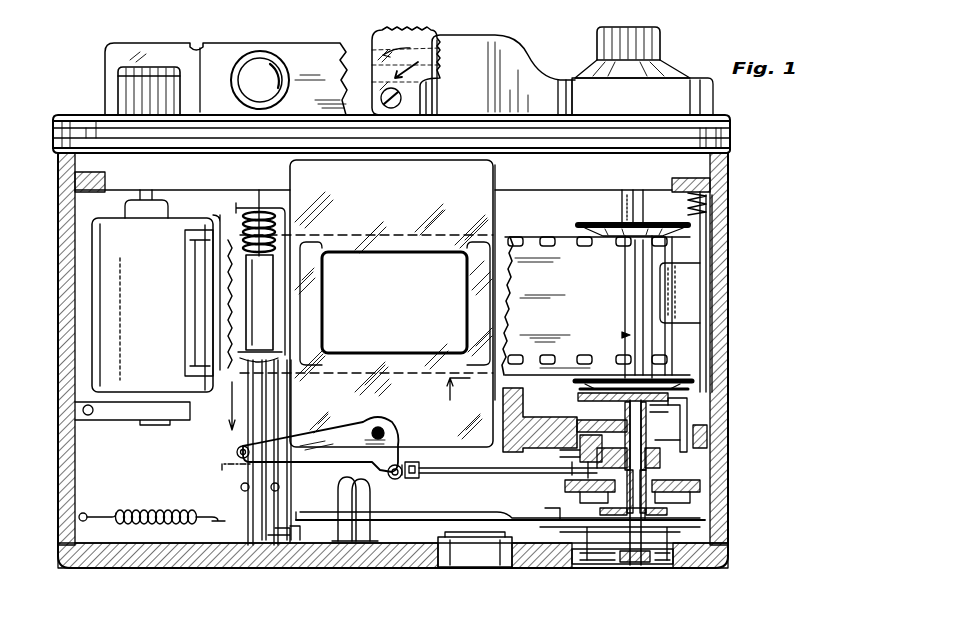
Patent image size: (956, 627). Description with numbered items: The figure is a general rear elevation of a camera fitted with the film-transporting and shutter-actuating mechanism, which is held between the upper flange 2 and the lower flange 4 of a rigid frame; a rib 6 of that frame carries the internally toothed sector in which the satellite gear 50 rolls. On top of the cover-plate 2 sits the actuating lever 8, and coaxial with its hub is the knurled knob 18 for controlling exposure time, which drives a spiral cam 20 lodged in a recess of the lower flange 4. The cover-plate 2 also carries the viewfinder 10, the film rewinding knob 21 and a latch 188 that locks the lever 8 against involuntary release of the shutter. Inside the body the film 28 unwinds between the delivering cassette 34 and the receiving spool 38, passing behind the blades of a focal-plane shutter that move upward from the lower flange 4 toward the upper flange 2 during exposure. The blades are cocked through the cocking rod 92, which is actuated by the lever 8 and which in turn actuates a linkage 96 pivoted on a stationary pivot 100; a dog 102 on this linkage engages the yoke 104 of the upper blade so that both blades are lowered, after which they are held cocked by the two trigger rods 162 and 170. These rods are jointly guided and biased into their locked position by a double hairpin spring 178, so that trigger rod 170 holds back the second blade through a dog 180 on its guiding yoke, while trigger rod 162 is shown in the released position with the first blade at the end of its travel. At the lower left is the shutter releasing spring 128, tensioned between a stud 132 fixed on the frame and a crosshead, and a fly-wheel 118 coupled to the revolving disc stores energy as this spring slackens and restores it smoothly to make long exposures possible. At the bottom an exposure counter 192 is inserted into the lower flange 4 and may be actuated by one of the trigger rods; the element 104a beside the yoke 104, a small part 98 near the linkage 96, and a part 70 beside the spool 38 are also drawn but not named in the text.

The upper flange 2 is at (560, 190).
The lower flange 4 is at (545, 562).
The rib 6 is at (543, 420).
The actuating lever 8 is at (487, 44).
The viewfinder 10 is at (264, 72).
The knurled knob 18 is at (662, 40).
The spiral cam 20 is at (600, 566).
The film rewinding knob 21 is at (120, 81).
The film 28 is at (526, 246).
The delivering cassette 34 is at (172, 230).
The receiving spool 38 is at (600, 224).
The satellite gear 50 is at (588, 440).
The spool latch 70 is at (676, 296).
The cocking rod 92 is at (450, 475).
The linkage 96 is at (333, 450).
The lever end bracket 98 is at (416, 468).
The stationary pivot 100 is at (383, 428).
The dog 102 is at (237, 452).
The yoke 104 is at (233, 372).
The plunger lower end 104a is at (238, 477).
The fly-wheel 118 is at (566, 493).
The shutter releasing spring 128 is at (152, 507).
The stud 132 is at (96, 507).
The trigger rod 162 is at (392, 480).
The trigger rod 170 is at (394, 520).
The double hairpin spring 178 is at (350, 537).
The dog 180 is at (280, 545).
The latch 188 is at (410, 50).
The exposure counter 192 is at (462, 552).